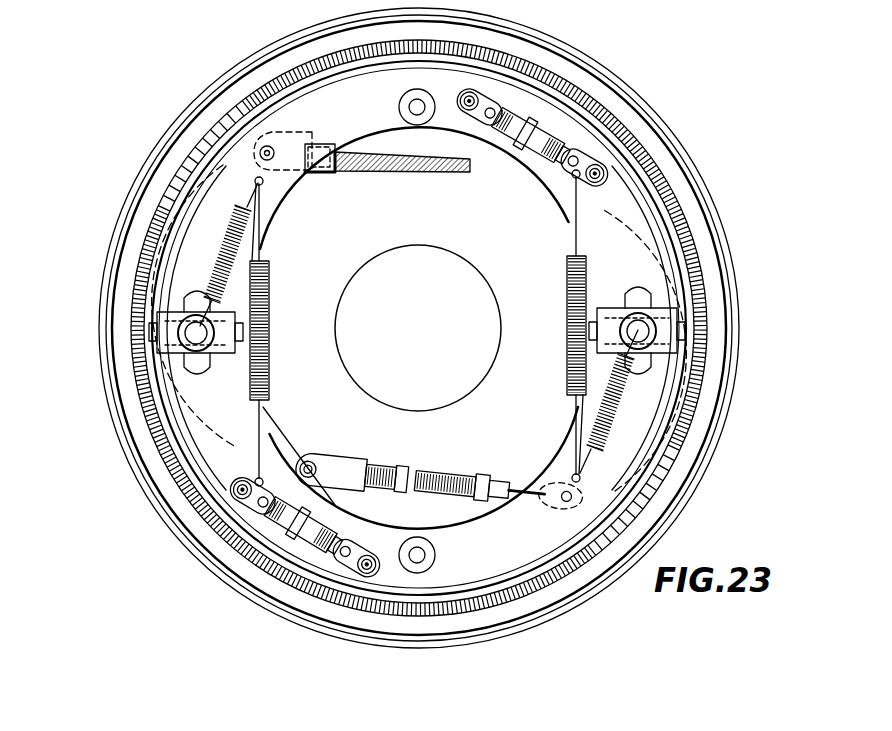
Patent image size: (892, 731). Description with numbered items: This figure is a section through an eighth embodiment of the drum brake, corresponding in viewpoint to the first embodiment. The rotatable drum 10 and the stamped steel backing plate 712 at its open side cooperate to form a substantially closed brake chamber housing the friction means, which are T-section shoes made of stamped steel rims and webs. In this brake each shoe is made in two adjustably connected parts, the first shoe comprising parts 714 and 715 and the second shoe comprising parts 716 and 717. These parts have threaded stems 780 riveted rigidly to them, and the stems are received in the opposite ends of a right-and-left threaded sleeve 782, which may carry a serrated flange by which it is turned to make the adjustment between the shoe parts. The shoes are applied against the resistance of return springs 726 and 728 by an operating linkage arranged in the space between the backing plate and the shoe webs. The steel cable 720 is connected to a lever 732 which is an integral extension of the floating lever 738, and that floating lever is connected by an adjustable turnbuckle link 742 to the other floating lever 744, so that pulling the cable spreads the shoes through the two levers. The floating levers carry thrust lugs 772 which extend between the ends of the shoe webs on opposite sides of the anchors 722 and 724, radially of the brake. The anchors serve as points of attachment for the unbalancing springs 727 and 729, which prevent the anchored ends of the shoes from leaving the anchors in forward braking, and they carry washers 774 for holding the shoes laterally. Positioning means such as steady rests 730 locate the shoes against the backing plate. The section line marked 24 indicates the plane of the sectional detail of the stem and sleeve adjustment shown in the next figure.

The rotatable drum 10 is at (672, 203).
The backing plate 712 is at (717, 252).
The shoe part 714 is at (305, 105).
The shoe part 715 is at (620, 197).
The shoe part 716 is at (512, 560).
The shoe part 717 is at (195, 440).
The cable 720 is at (385, 163).
The anchor 722 is at (165, 345).
The anchor 724 is at (625, 320).
The return spring 726 is at (270, 290).
The unbalancing spring 727 is at (245, 250).
The return spring 728 is at (566, 293).
The unbalancing spring 729 is at (597, 420).
The steady rest 730 is at (420, 124).
The lever 732 is at (170, 233).
The floating lever 738 is at (288, 437).
The adjustable turnbuckle link 742 is at (440, 480).
The floating lever 744 is at (635, 418).
The thrust lug 772 is at (157, 333).
The washer 774 is at (160, 318).
The threaded stem 780 is at (480, 98).
The right-and-left threaded sleeve 782 is at (548, 130).
The section line 24 is at (222, 480).